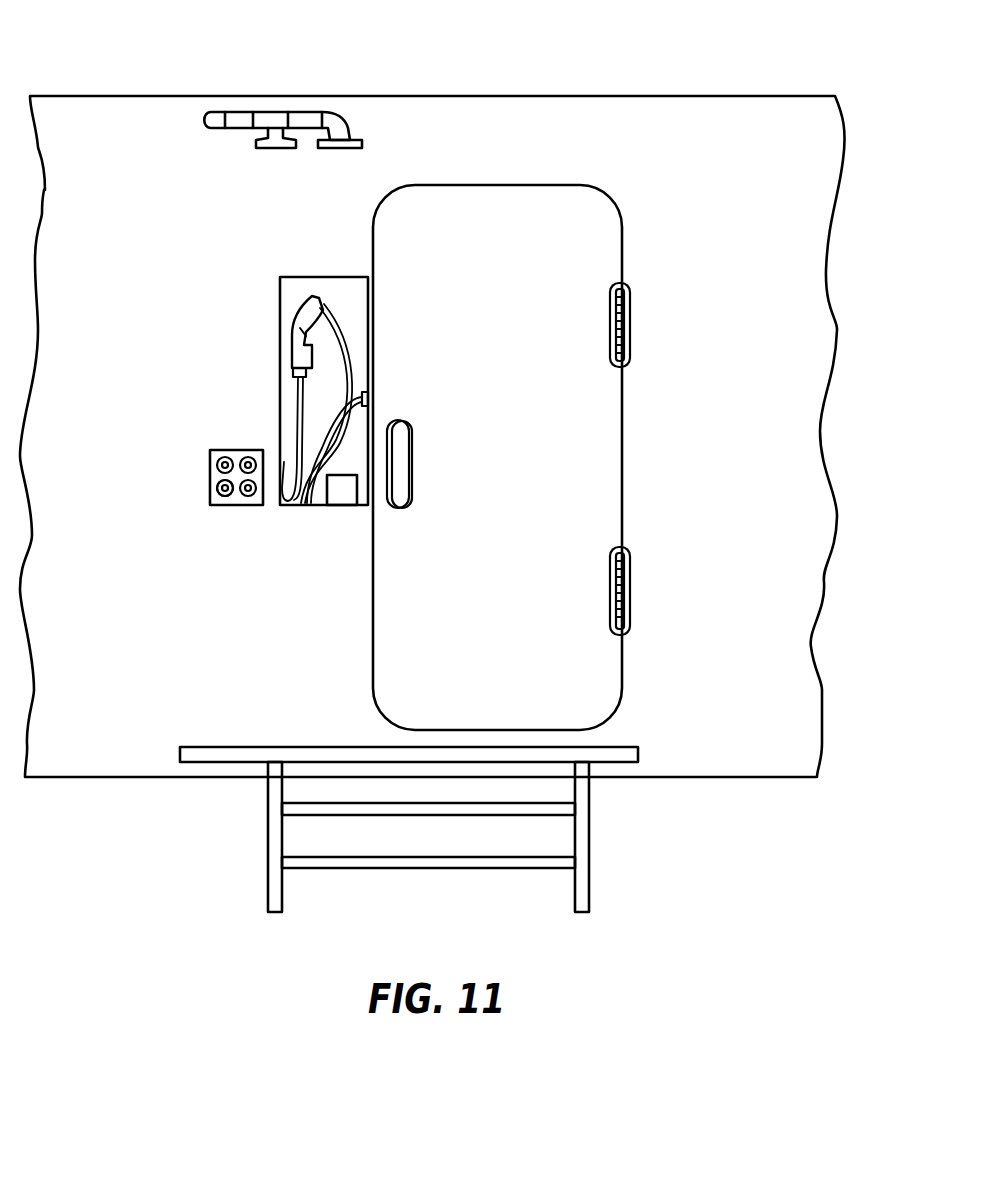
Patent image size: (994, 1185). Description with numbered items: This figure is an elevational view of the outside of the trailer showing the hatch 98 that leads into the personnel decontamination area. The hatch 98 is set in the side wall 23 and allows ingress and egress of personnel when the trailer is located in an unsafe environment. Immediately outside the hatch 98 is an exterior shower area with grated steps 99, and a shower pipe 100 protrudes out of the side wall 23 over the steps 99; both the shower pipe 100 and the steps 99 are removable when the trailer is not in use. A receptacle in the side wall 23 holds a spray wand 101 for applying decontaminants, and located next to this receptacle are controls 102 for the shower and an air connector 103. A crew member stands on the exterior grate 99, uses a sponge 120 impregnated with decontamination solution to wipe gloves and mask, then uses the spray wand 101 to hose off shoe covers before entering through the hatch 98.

The side wall 23 is at (838, 294).
The hatch 98 is at (630, 240).
The grated steps 99 is at (196, 746).
The shower pipe 100 is at (245, 112).
The spray wand 101 is at (292, 334).
The controls 102 is at (252, 452).
The air connector 103 is at (225, 505).
The sponge 120 is at (344, 500).